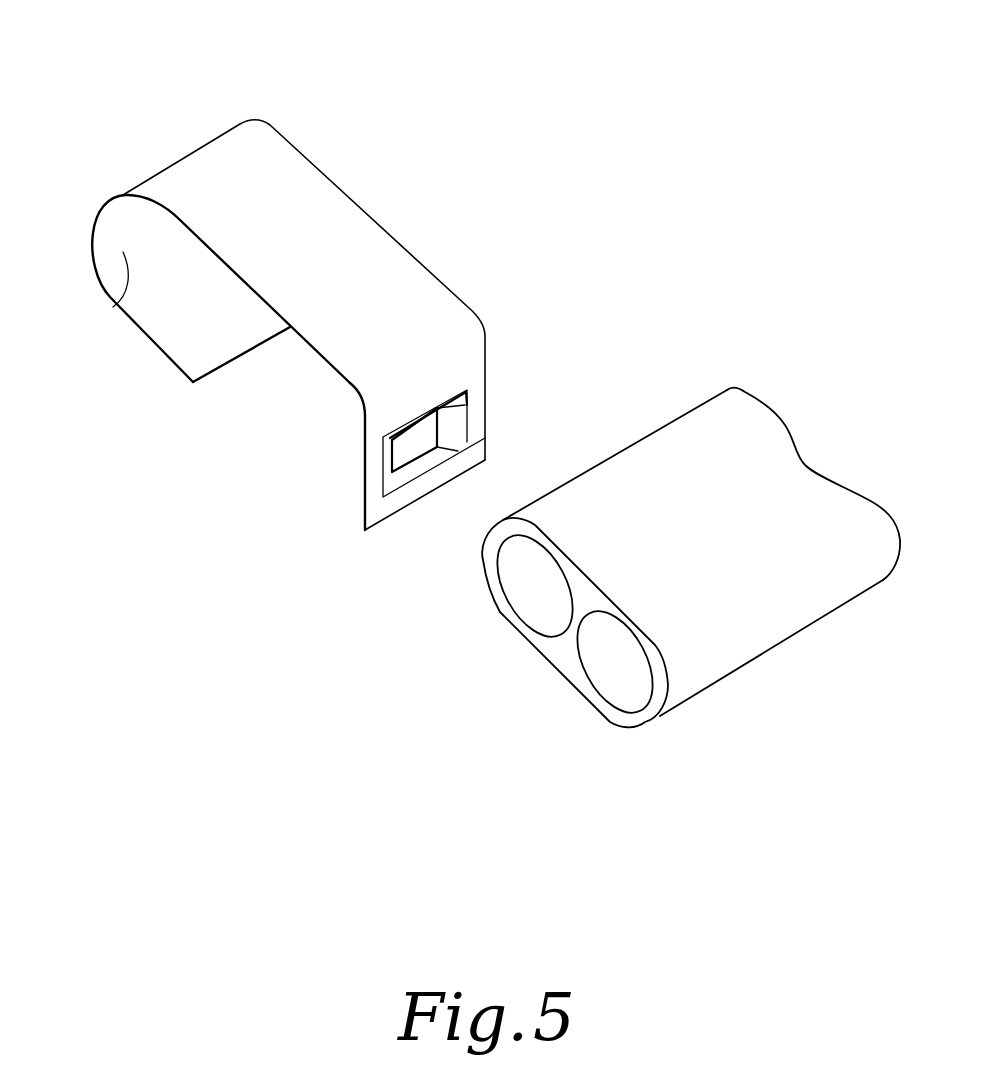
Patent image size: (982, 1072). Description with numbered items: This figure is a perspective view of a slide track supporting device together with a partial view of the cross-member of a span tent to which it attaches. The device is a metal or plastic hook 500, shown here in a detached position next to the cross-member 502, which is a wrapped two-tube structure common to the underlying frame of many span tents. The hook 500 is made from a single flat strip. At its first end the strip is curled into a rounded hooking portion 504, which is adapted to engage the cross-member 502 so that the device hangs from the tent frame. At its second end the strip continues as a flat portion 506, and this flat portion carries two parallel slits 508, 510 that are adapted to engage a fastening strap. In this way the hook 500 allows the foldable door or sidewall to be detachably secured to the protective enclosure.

The hook 500 is at (455, 157).
The cross-member 502 is at (807, 345).
The rounded hooking portion 504 is at (113, 307).
The flat portion 506 is at (377, 512).
The slit 508 is at (467, 393).
The slit 510 is at (485, 438).